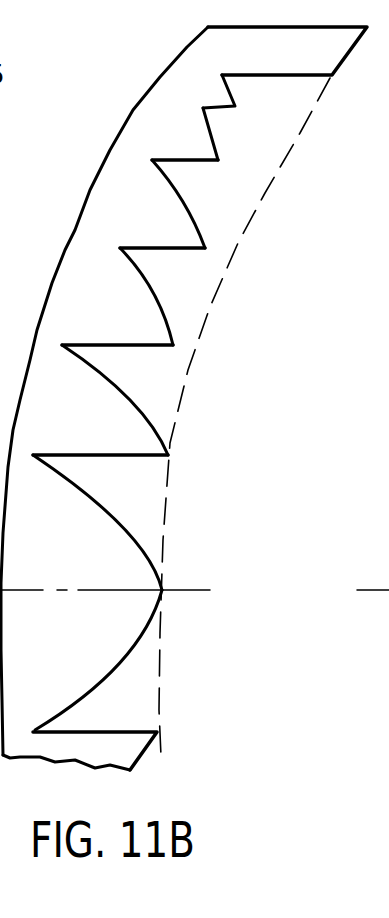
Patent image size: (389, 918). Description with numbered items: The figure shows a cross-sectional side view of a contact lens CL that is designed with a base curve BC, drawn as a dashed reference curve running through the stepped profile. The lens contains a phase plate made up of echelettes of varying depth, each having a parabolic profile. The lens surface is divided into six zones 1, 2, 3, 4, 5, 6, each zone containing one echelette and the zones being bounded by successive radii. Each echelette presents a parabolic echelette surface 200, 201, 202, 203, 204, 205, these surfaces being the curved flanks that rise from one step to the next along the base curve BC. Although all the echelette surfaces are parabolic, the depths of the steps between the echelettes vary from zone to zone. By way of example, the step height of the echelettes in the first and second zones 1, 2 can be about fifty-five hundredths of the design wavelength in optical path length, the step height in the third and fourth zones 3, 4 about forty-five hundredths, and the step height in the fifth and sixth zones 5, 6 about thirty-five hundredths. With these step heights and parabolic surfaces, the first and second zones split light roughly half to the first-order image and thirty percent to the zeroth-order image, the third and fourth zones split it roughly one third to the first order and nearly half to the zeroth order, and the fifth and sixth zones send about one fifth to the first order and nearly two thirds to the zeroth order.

The first zone 1 is at (75, 558).
The second zone 2 is at (103, 444).
The third zone 3 is at (136, 326).
The fourth zone 4 is at (156, 229).
The fifth zone 5 is at (186, 155).
The sixth zone 6 is at (212, 103).
The echelette surface 200 is at (122, 528).
The echelette surface 201 is at (143, 412).
The echelette surface 202 is at (167, 313).
The echelette surface 203 is at (186, 207).
The echelette surface 204 is at (217, 140).
The echelette surface 205 is at (230, 97).
The contact lens CL is at (98, 303).
The base curve BC is at (247, 227).